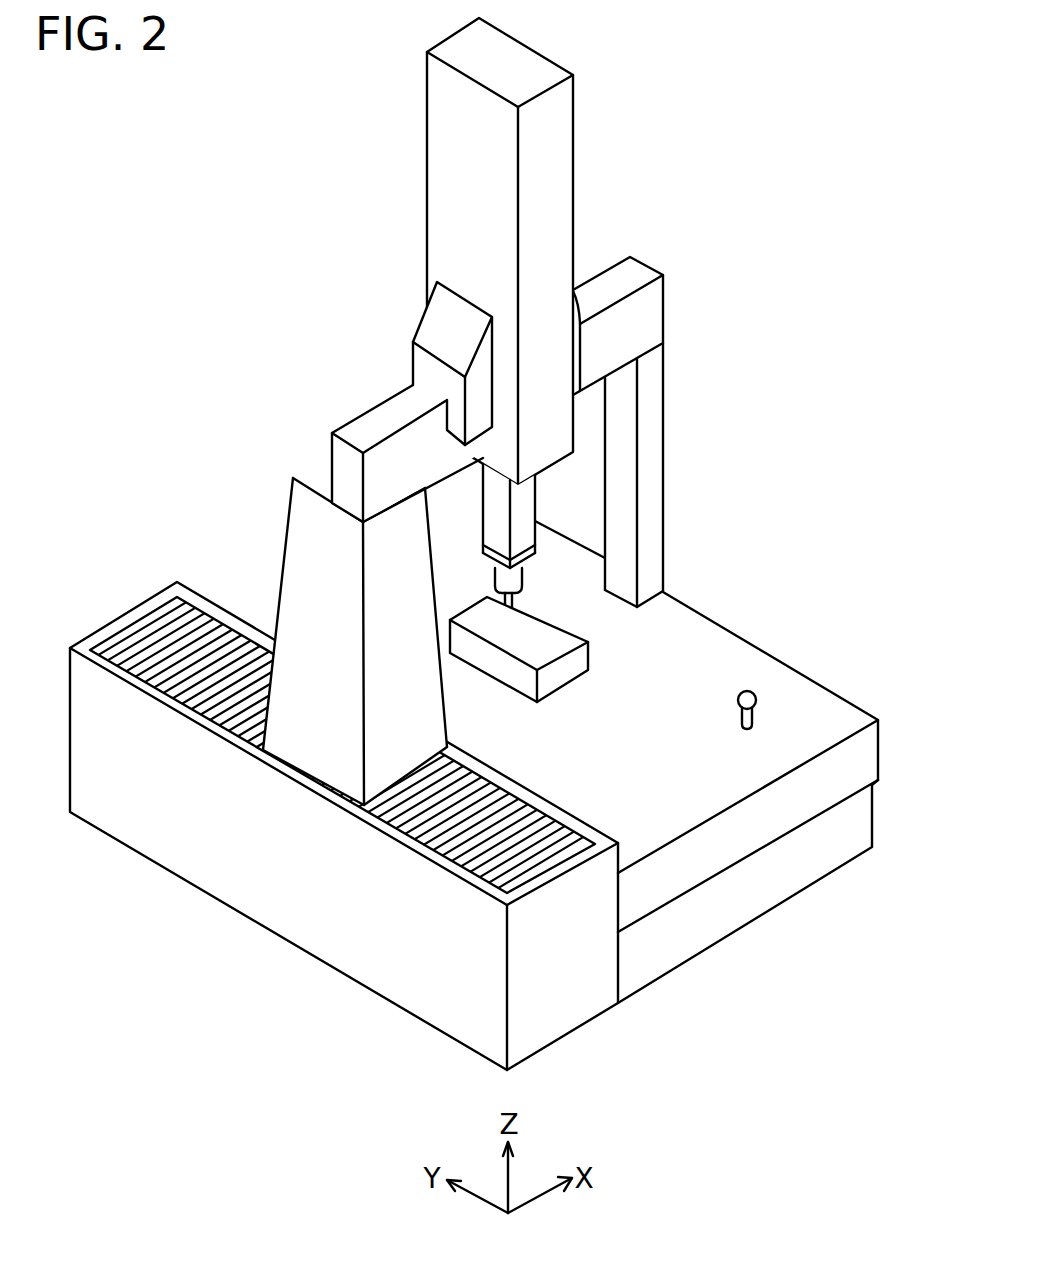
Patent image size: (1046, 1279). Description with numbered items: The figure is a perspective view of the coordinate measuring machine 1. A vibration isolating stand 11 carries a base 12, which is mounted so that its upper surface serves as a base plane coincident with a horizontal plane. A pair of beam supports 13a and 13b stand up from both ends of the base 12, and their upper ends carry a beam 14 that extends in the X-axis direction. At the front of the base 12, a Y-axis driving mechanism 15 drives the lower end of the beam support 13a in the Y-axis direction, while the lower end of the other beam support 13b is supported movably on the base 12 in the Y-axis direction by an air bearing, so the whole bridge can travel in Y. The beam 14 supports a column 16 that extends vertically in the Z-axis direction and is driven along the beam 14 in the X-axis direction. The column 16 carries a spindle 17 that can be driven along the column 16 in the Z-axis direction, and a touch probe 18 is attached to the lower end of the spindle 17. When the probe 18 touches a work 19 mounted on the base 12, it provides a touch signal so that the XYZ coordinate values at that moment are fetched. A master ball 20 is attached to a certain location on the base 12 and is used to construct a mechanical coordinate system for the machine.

The coordinate measuring machine 1 is at (770, 243).
The vibration isolating stand 11 is at (857, 825).
The base 12 is at (825, 712).
The beam support 13a is at (300, 528).
The beam support 13b is at (655, 445).
The beam 14 is at (632, 277).
The Y-axis driving mechanism 15 is at (168, 642).
The column 16 is at (438, 205).
The spindle 17 is at (525, 497).
The touch probe 18 is at (517, 615).
The work 19 is at (583, 657).
The master ball 20 is at (750, 690).